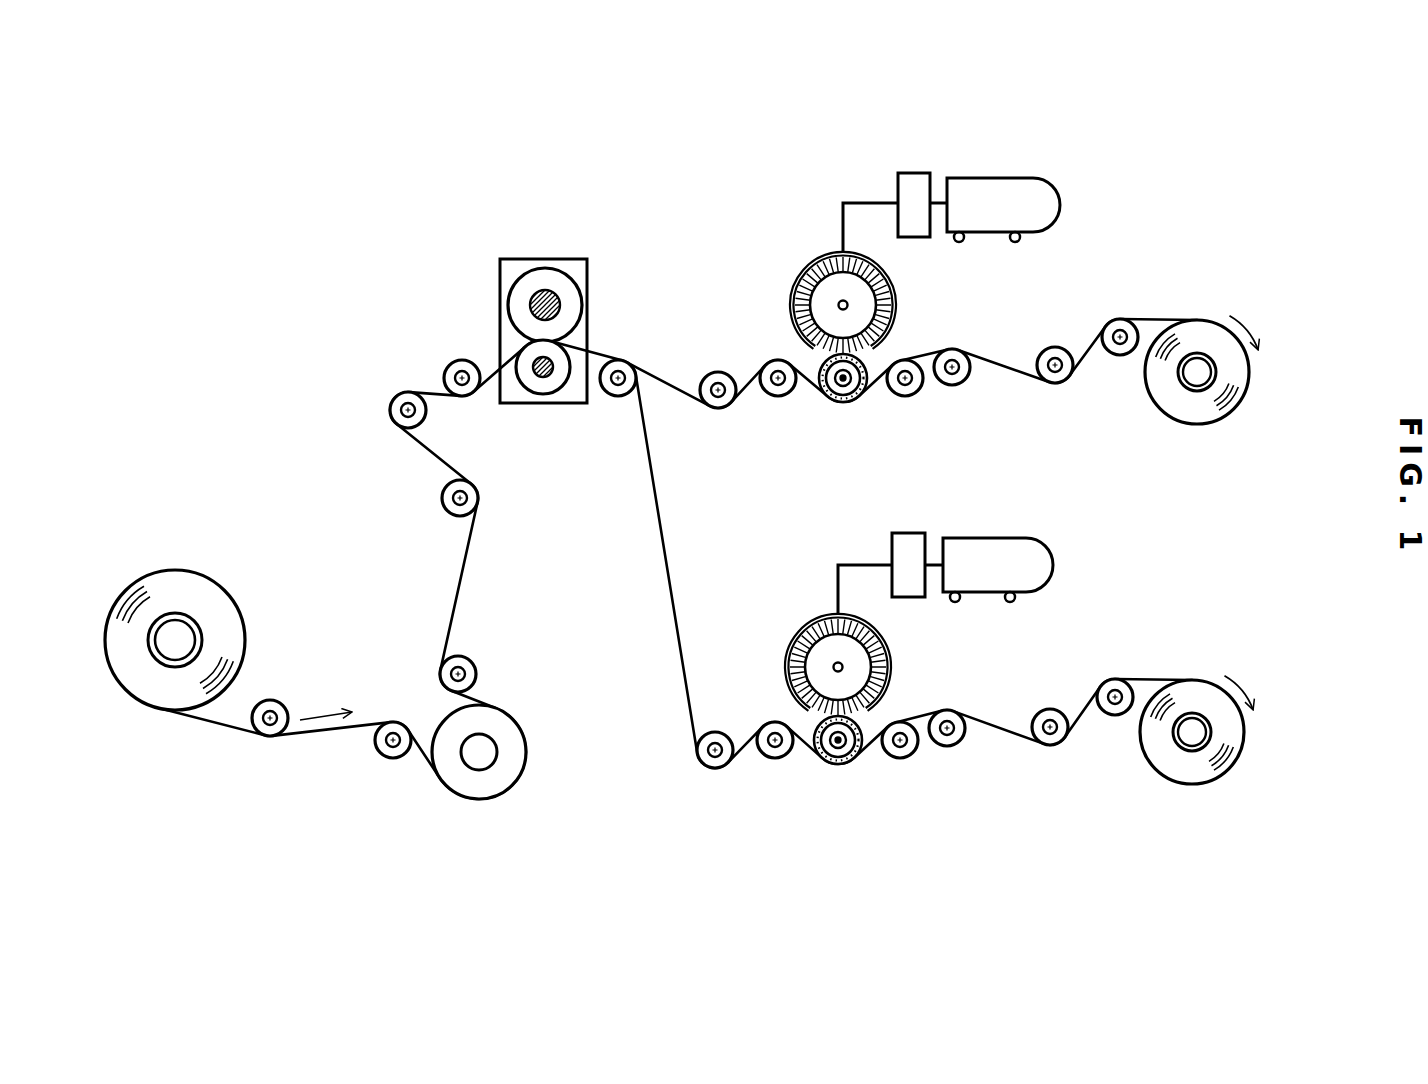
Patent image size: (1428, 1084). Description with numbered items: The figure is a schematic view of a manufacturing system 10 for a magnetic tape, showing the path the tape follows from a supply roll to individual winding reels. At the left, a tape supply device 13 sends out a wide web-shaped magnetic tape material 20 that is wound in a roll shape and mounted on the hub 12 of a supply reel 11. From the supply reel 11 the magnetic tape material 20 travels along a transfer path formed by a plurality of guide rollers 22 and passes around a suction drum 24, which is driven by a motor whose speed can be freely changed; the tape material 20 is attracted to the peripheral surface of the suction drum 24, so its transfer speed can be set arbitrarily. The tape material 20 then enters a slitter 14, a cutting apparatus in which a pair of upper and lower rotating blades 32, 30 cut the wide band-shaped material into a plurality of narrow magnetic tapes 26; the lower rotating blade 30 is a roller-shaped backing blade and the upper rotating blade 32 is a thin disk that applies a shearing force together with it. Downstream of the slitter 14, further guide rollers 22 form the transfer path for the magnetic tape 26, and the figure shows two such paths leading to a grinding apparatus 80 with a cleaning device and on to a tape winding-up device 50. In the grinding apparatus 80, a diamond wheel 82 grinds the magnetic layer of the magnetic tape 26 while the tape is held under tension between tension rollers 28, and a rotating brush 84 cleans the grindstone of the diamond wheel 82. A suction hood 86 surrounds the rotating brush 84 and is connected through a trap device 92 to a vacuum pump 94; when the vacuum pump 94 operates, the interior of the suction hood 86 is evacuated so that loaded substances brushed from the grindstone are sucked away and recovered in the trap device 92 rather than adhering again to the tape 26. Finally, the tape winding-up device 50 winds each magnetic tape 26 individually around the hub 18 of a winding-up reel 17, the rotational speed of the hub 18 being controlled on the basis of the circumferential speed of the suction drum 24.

The manufacturing system 10 is at (622, 190).
The supply reel 11 is at (175, 562).
The hub 12 is at (210, 632).
The tape supply device 13 is at (175, 725).
The slitter 14 is at (594, 325).
The winding-up reel 17 is at (1180, 302).
The hub 18 is at (1216, 380).
The magnetic tape material 20 is at (223, 720).
The guide rollers 22 is at (447, 363).
The suction drum 24 is at (513, 782).
The magnetic tapes 26 is at (680, 387).
The tension rollers 28 is at (777, 397).
The lower rotating blade 30 is at (545, 395).
The upper rotating blade 32 is at (549, 263).
The tape winding-up device 50 is at (1187, 522).
The grinding apparatus 80 is at (834, 463).
The diamond wheel 82 is at (843, 403).
The rotating brush 84 is at (850, 306).
The suction hood 86 is at (812, 262).
The trap device 92 is at (916, 172).
The vacuum pump 94 is at (993, 178).